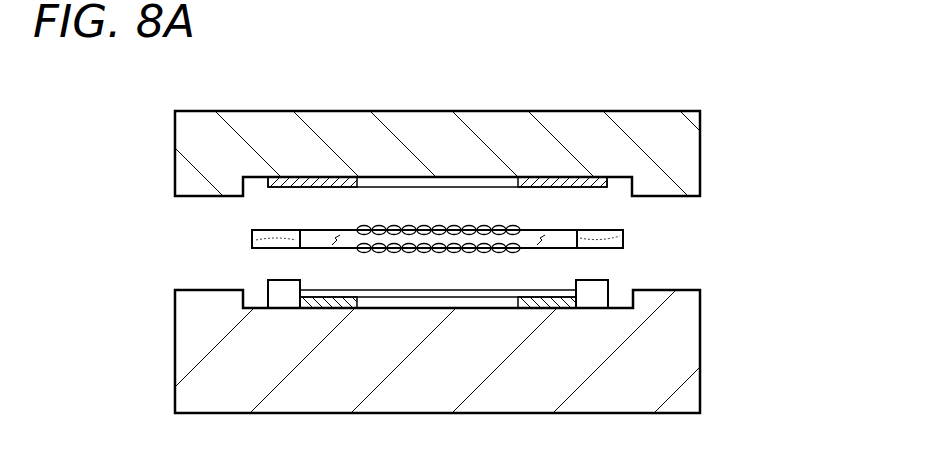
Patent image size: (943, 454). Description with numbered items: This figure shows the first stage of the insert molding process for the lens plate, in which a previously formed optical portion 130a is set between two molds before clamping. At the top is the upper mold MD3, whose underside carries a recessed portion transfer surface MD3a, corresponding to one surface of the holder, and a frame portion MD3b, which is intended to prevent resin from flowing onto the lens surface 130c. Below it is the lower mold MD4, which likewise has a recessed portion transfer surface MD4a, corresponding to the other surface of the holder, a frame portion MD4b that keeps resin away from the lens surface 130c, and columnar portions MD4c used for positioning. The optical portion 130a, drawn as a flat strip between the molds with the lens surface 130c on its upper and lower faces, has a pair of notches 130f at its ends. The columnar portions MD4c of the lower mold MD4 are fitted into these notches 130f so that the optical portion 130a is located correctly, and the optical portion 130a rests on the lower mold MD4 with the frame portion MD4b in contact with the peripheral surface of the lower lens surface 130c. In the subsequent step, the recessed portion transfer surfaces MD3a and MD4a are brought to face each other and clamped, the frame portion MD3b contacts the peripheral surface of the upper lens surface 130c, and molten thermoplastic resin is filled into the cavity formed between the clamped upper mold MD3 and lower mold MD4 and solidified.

The upper mold MD3 is at (700, 111).
The recessed portion transfer surface MD3a is at (463, 187).
The frame portion MD3b is at (572, 192).
The lower mold MD4 is at (700, 413).
The recessed portion transfer surface MD4a is at (403, 297).
The frame portion MD4b is at (541, 308).
The columnar portion MD4c is at (268, 289).
The optical portion 130a is at (630, 239).
The lens surface 130c is at (420, 229).
The notch 130f is at (252, 238).